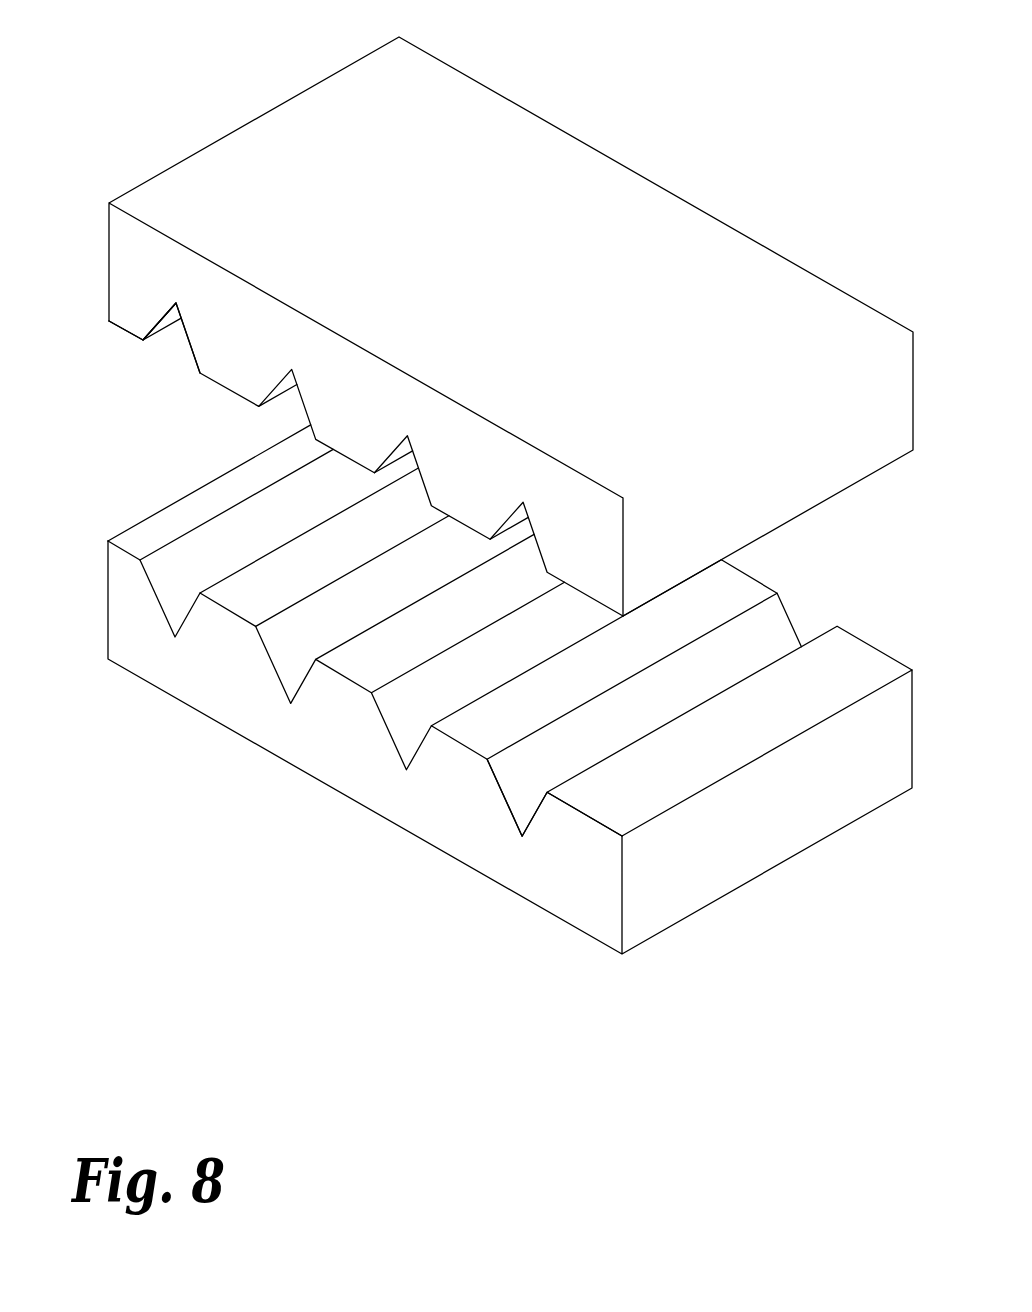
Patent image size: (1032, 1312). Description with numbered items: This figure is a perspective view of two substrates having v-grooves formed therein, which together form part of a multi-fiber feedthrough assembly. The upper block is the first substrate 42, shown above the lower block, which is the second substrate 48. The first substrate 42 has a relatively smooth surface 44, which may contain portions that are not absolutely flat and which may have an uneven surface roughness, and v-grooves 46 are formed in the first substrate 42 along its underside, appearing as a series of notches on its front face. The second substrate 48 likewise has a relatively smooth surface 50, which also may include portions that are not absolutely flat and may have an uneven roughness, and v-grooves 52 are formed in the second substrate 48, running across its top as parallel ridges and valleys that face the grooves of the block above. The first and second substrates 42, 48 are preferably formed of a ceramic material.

The first substrate 42 is at (642, 177).
The relatively smooth surface 44 is at (120, 328).
The v-grooves 46 is at (174, 313).
The second substrate 48 is at (766, 872).
The relatively smooth surface 50 is at (872, 647).
The v-grooves 52 is at (788, 617).